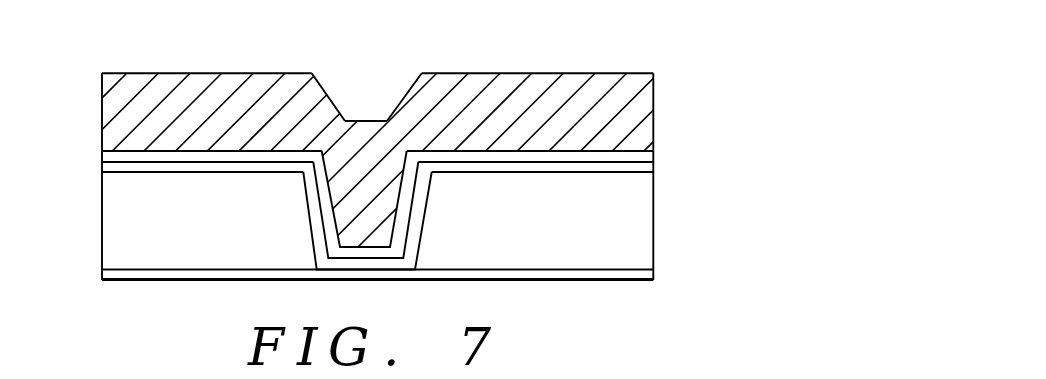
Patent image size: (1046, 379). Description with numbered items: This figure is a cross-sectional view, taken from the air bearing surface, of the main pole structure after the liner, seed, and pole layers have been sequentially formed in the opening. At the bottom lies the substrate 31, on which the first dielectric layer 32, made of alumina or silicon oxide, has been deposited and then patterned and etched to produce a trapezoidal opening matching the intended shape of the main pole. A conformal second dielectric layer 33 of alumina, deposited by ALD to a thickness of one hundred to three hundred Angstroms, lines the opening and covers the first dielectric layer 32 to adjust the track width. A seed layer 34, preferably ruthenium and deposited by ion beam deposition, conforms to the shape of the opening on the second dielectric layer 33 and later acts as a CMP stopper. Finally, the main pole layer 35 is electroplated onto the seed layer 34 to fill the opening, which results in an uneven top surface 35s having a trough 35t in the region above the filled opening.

The substrate 31 is at (637, 275).
The first dielectric layer 32 is at (630, 232).
The second dielectric layer 33 is at (638, 163).
The seed layer 34 is at (638, 157).
The main pole layer 35 is at (637, 107).
The trough 35t is at (357, 92).
The top surface 35s is at (395, 102).